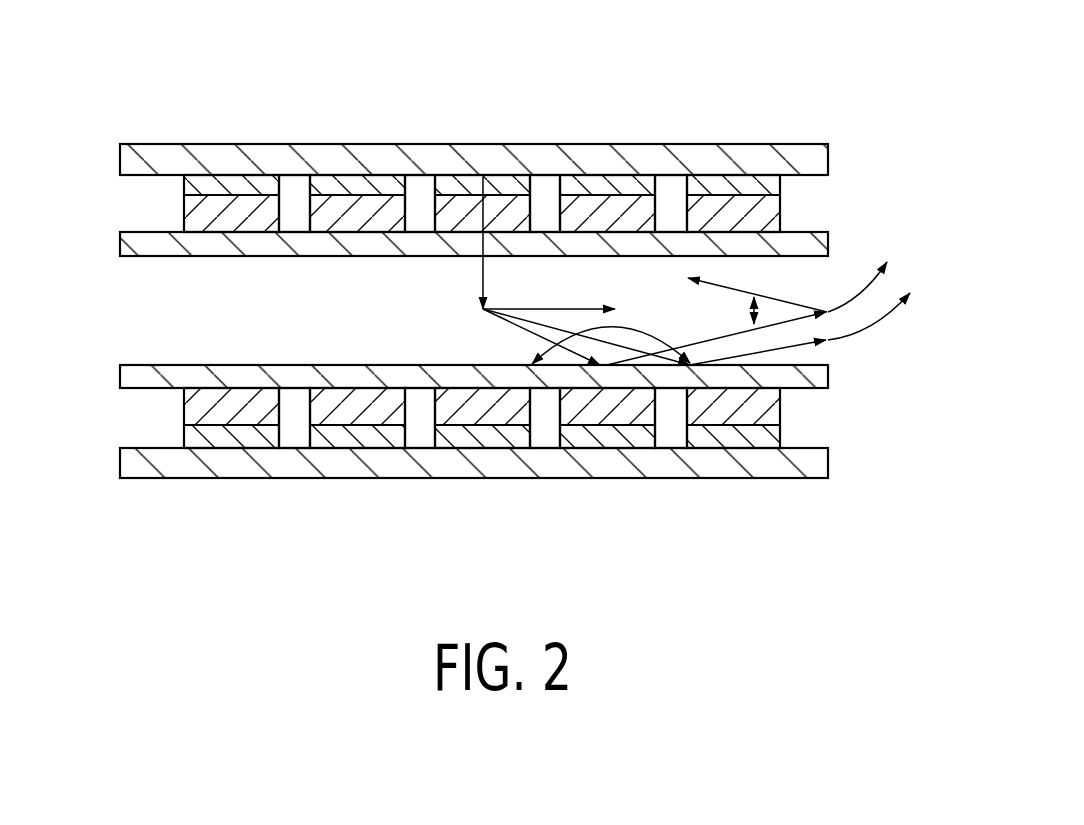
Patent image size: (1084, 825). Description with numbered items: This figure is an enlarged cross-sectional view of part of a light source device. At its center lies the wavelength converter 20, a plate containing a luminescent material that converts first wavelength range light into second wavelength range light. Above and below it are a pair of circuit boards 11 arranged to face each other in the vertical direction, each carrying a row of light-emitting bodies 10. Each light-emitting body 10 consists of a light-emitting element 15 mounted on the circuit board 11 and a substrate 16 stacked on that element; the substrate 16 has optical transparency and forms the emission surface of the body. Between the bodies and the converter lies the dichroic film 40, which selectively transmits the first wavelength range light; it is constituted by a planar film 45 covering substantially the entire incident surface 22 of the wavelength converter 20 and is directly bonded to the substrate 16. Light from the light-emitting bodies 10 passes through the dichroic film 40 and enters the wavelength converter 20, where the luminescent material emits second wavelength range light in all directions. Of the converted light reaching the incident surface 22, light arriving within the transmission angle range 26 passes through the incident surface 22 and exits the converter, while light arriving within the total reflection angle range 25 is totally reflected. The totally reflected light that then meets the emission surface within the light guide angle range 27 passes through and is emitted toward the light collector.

The light-emitting body 10 is at (482, 308).
The circuit board 11 is at (640, 157).
The light-emitting element 15 is at (240, 176).
The substrate 16 is at (245, 223).
The wavelength converter 20 is at (140, 302).
The incident surface 22 is at (360, 252).
The total reflection angle range 25 is at (542, 354).
The transmission angle range 26 is at (627, 327).
The light guide angle range 27 is at (751, 310).
The dichroic film 40 is at (537, 342).
The planar film 45 is at (815, 237).